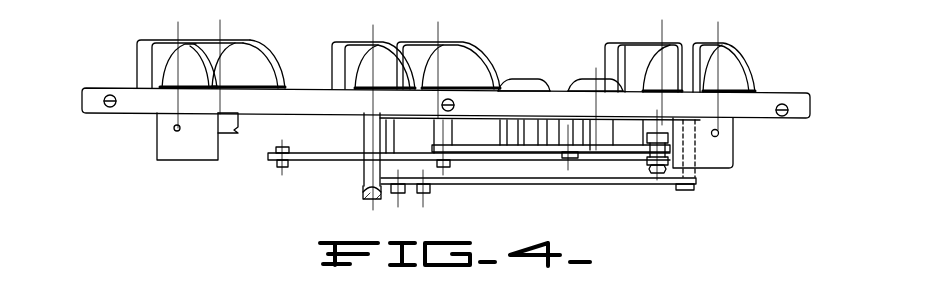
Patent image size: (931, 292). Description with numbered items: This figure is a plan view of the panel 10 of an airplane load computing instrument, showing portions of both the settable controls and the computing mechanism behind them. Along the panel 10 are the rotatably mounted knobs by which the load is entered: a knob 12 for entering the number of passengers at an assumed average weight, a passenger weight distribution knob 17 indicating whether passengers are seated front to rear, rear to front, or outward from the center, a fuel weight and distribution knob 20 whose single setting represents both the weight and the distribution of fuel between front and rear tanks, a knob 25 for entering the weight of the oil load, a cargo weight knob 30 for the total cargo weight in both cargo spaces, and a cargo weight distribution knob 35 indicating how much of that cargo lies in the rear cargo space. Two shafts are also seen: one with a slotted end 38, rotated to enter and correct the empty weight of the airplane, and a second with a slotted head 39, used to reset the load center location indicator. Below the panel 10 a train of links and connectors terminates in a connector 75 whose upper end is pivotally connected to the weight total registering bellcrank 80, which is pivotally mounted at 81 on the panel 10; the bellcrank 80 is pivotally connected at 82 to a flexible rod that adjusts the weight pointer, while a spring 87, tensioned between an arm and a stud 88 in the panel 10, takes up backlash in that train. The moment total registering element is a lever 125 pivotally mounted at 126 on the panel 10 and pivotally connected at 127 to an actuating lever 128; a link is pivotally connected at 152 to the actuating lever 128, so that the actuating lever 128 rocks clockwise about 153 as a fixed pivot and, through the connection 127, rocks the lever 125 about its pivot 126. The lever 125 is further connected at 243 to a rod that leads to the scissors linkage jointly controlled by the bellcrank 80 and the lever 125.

The panel 10 is at (99, 90).
The passenger weight distribution knob 17 is at (185, 53).
The knob 12 is at (228, 55).
The knob 25 is at (363, 52).
The fuel weight and distribution knob 20 is at (448, 53).
The slotted head 39 is at (528, 84).
The slotted end 38 is at (585, 86).
The cargo weight knob 30 is at (658, 57).
The cargo weight distribution knob 35 is at (710, 57).
The stud 88 is at (367, 132).
The spring 87 is at (363, 190).
The actuating lever 128 is at (333, 160).
The pivotal connection 152 is at (283, 168).
The pivotal connection 127 is at (447, 167).
The lever 125 is at (591, 150).
The pivot 126 is at (563, 160).
The bellcrank 80 is at (513, 184).
The pivotal connection 82 is at (398, 194).
The connector 75 is at (423, 194).
The fixed pivot 153 is at (655, 174).
The pivotal connection 243 is at (672, 143).
The pivot 81 is at (689, 190).